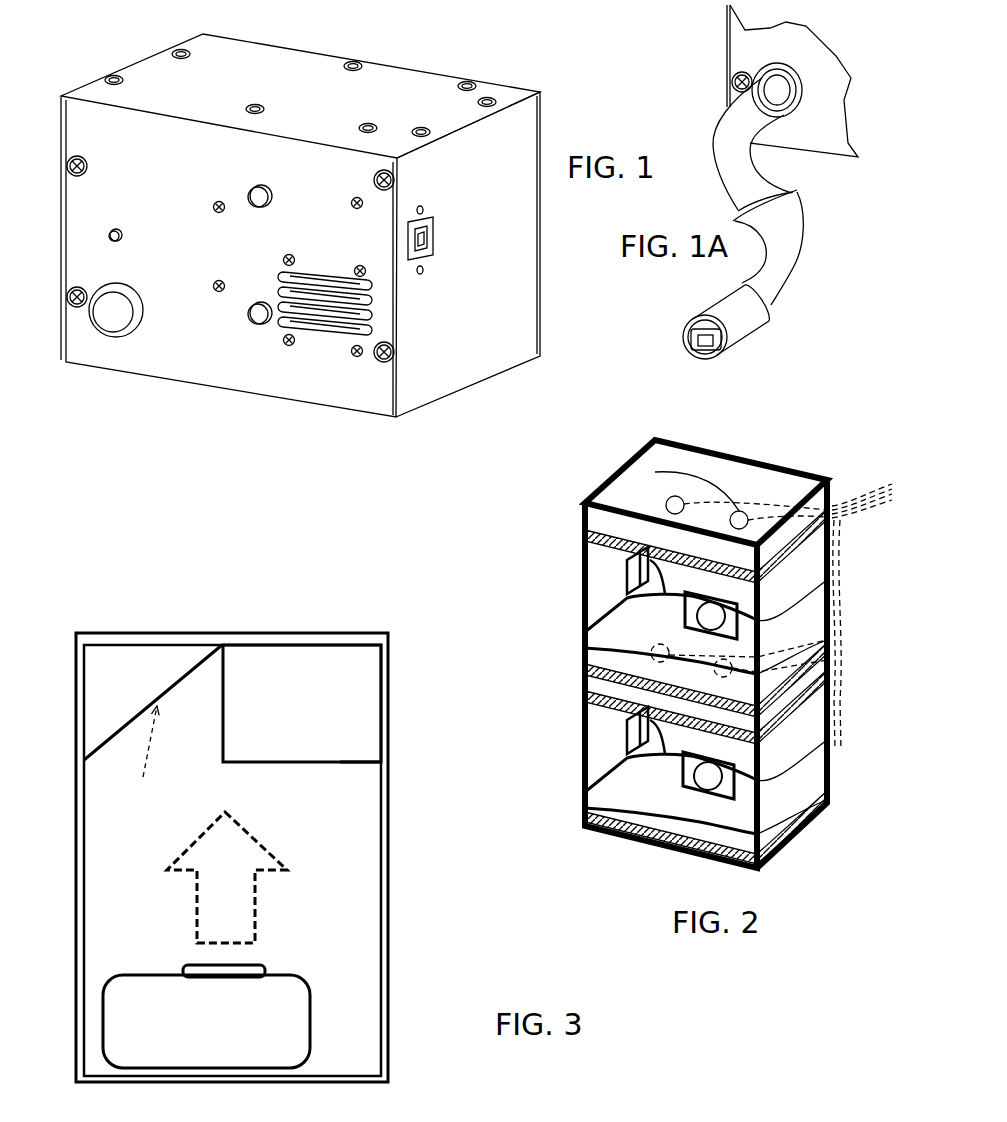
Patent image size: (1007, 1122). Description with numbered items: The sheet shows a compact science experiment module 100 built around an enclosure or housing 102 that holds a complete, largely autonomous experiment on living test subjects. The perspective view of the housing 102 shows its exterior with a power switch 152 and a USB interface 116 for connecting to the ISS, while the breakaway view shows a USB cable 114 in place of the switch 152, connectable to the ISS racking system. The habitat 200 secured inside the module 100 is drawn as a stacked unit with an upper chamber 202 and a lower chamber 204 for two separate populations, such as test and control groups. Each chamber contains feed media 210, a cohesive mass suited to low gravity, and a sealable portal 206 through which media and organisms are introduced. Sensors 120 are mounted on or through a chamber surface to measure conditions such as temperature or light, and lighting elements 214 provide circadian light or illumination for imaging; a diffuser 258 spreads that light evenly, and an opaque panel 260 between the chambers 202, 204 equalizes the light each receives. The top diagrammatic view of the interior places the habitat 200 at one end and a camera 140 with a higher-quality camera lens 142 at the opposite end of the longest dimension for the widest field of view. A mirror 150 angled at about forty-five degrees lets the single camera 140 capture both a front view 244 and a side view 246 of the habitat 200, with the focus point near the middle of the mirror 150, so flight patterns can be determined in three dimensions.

In FIG. 1, the module 100 is at (232, 446).
In FIG. 3, the module 100 is at (391, 891).
In FIG. 1, the housing 102 is at (280, 40).
In FIG. 1A, the housing 102 is at (742, 43).
In FIG. 1A, the USB cable 114 is at (788, 265).
In FIG. 1, the USB interface 116 is at (428, 253).
In FIG. 2, the sensors 120 is at (685, 612).
In FIG. 3, the camera 140 is at (297, 1028).
In FIG. 3, the camera lens 142 is at (257, 967).
In FIG. 1, the mirror 150 is at (347, 313).
In FIG. 3, the mirror 150 is at (147, 658).
In FIG. 1, the power switch 152 is at (118, 318).
In FIG. 2, the habitat 200 is at (758, 444).
In FIG. 3, the habitat 200 is at (292, 657).
In FIG. 2, the upper chamber 202 is at (578, 582).
In FIG. 2, the lower chamber 204 is at (578, 744).
In FIG. 2, the portal 206 is at (627, 568).
In FIG. 2, the feed media 210 is at (668, 632).
In FIG. 2, the lighting elements 214 is at (670, 498).
In FIG. 3, the front view 244 is at (338, 772).
In FIG. 3, the side view 246 is at (220, 697).
In FIG. 2, the diffuser 258 is at (585, 530).
In FIG. 2, the opaque panel 260 is at (585, 684).